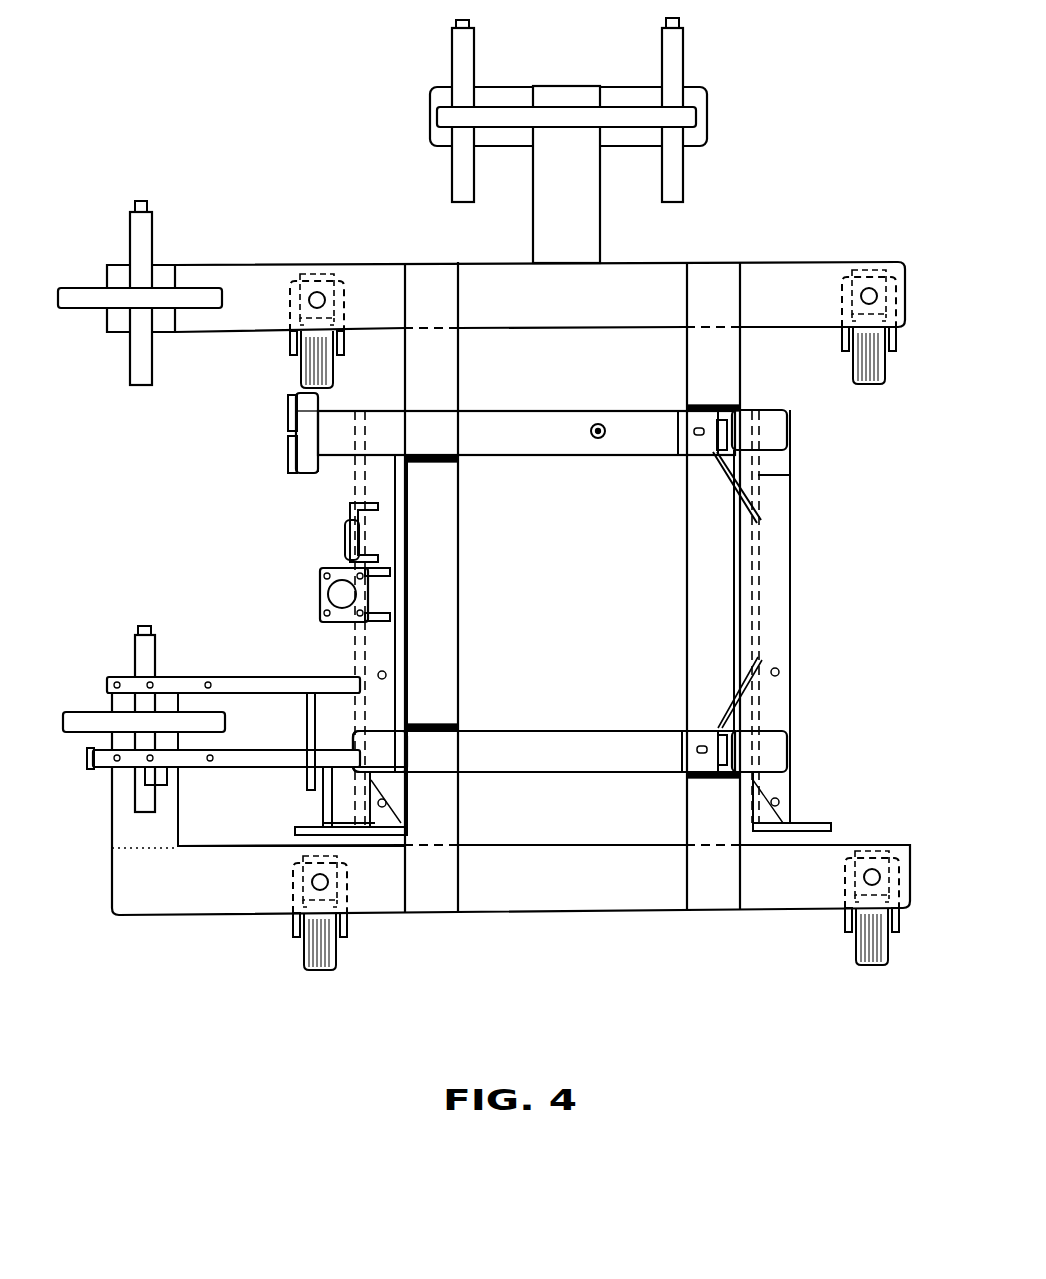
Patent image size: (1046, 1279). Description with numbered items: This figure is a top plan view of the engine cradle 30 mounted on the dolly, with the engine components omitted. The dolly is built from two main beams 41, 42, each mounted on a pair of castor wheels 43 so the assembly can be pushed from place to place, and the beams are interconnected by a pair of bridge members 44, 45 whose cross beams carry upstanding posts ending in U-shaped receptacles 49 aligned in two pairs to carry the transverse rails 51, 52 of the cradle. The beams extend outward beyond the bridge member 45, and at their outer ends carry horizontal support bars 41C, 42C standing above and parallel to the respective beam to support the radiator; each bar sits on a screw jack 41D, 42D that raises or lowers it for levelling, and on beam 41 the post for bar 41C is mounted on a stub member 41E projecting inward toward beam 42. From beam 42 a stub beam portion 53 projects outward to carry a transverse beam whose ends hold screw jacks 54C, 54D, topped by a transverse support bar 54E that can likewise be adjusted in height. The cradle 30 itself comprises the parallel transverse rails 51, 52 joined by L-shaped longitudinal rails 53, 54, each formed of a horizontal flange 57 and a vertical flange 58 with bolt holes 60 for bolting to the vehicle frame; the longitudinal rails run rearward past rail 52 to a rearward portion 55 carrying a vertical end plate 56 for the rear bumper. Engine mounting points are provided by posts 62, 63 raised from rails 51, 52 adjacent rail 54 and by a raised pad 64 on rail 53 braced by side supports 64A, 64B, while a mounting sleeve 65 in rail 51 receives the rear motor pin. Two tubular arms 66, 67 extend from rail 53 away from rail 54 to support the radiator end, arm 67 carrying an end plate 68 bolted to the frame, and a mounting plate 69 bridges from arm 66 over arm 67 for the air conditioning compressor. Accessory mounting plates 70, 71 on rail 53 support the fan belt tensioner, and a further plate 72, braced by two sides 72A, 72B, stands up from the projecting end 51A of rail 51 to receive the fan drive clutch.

The cradle 30 is at (572, 587).
The main beam 41 is at (588, 910).
The horizontal support bar 41C is at (72, 710).
The screw jack 41D is at (138, 640).
The stub member 41E is at (155, 837).
The main beam 42 is at (380, 253).
The horizontal support bar 42C is at (95, 310).
The screw jack 42D is at (152, 225).
The castor wheel 43 is at (305, 352).
The bridge member 44 is at (688, 592).
The bridge member 45 is at (460, 605).
The U-shaped receptacle 49 is at (712, 400).
The rail 51 is at (548, 437).
The projecting end 51A is at (330, 445).
The rail 52 is at (603, 775).
The longitudinal rail 53 is at (565, 210).
The longitudinal rail 54 is at (622, 85).
The screw jack 54C is at (455, 52).
The screw jack 54D is at (680, 65).
The transverse support bar 54E is at (550, 113).
The rearward portion 55 is at (795, 805).
The end plate 56 is at (300, 836).
The horizontal flange 57 is at (780, 532).
The vertical flange 58 is at (760, 618).
The bolt hole 60 is at (780, 672).
The post 62 is at (695, 432).
The post 63 is at (685, 750).
The raised pad 64 is at (318, 585).
The side support 64A is at (392, 572).
The side support 64B is at (392, 617).
The mounting sleeve 65 is at (600, 423).
The tubular arm 66 is at (240, 676).
The tubular arm 67 is at (278, 773).
The end plate 68 is at (90, 768).
The mounting plate 69 is at (305, 718).
The accessory mounting plate 70 is at (348, 512).
The accessory mounting plate 71 is at (343, 540).
The accessory mounting plate 72 is at (292, 435).
The side 72A is at (300, 472).
The side 72B is at (290, 405).